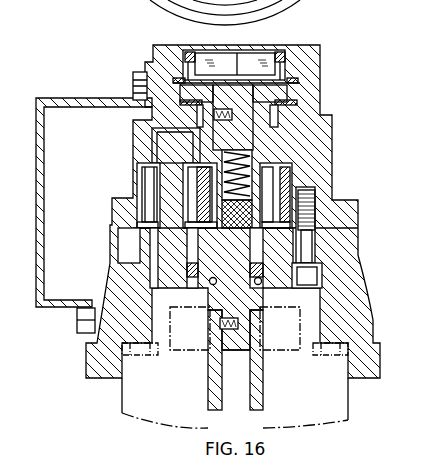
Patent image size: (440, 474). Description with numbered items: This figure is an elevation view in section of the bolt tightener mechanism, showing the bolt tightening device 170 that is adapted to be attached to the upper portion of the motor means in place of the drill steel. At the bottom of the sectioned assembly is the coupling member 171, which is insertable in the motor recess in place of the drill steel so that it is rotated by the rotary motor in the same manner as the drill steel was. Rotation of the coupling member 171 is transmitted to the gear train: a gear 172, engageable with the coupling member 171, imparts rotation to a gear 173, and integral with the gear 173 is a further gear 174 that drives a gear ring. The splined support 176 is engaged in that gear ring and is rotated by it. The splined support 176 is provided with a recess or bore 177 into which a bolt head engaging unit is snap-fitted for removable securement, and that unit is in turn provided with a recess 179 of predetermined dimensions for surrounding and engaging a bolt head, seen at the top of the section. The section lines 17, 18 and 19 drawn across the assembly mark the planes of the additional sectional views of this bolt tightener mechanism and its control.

The bolt tightening device 170 is at (337, 176).
The coupling member 171 is at (263, 396).
The gear 172 is at (247, 249).
The gear 173 is at (152, 250).
The gear 174 is at (173, 200).
The splined support 176 is at (263, 157).
The recess or bore 177 is at (297, 130).
The recess 179 is at (190, 55).
The section line 17- 17 is at (408, 350).
The section line 18- 18 is at (371, 184).
The section line 19- 19 is at (376, 247).